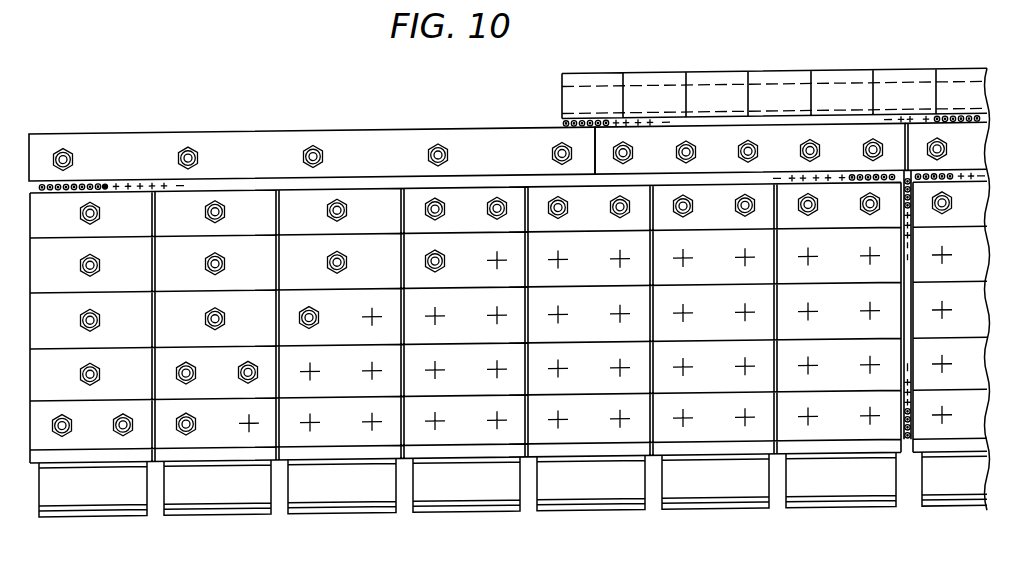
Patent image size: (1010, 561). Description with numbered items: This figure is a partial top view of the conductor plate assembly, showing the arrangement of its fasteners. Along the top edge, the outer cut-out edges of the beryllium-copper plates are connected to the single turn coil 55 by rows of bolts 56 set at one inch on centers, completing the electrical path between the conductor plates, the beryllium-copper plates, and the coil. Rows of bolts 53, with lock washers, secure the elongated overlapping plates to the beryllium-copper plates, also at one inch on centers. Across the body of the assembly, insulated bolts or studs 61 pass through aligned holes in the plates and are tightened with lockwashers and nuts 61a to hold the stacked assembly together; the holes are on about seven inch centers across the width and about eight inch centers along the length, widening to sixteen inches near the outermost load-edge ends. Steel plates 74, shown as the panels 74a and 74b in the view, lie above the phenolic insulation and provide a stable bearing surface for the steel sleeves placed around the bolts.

The bolts 53 is at (105, 186).
The single turn coil 55 is at (612, 82).
The bolts 56 is at (565, 131).
The insulated bolts or studs 61 is at (740, 213).
The nuts 61a is at (742, 208).
The steel plates 74 is at (770, 229).
The upper wall panel 74a is at (788, 151).
The upper wall panel 74b is at (368, 149).